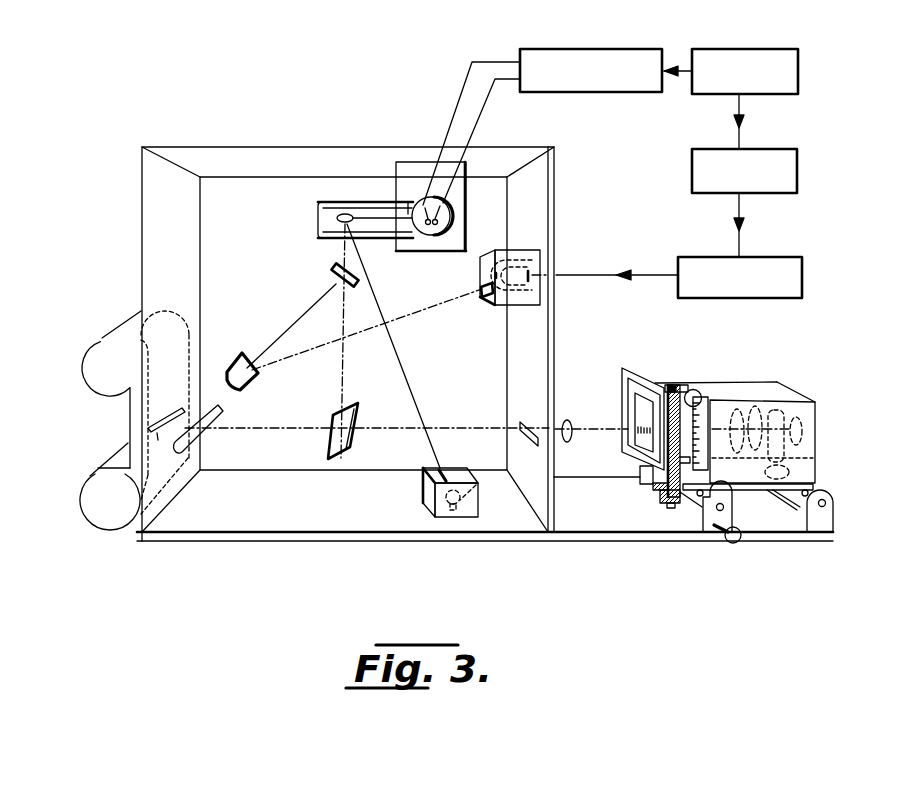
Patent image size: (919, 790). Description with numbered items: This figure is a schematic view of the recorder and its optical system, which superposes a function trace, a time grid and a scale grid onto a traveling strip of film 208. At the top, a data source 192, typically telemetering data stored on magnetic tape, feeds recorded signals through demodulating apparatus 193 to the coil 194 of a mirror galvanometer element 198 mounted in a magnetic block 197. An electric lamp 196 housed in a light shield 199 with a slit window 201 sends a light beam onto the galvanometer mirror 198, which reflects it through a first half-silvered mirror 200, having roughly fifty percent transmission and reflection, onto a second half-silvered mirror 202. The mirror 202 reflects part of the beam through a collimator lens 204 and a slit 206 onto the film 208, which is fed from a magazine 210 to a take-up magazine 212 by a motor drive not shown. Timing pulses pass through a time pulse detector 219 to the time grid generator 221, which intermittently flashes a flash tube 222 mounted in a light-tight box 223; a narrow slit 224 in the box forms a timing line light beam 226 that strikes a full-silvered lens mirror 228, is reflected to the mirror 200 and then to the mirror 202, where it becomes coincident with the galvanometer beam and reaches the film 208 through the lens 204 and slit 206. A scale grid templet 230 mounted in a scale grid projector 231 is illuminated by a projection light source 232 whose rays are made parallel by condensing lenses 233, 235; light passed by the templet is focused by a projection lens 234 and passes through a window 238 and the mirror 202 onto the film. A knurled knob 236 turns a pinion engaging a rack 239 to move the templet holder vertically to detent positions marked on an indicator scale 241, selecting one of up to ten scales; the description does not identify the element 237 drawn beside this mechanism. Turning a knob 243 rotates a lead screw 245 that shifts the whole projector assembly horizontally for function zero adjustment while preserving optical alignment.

The data source 192 is at (802, 48).
The demodulating apparatus 193 is at (608, 48).
The coil 194 is at (424, 202).
The electric lamp 196 is at (458, 512).
The magnetic block 197 is at (465, 224).
The mirror galvanometer element 198 is at (343, 214).
The light shield 199 is at (478, 503).
The first half-silvered mirror 200 is at (335, 266).
The slit window 201 is at (449, 472).
The second half-silvered mirror 202 is at (347, 450).
The collimator lens 204 is at (192, 437).
The slit 206 is at (157, 433).
The strip of film 208 is at (148, 426).
The magazine 210 is at (92, 348).
The take-up magazine 212 is at (92, 478).
The time pulse detector 219 is at (798, 171).
The time grid generator 221 is at (803, 277).
The flash tube 222 is at (532, 286).
The light-tight box 223 is at (528, 250).
The narrow slit 224 is at (494, 295).
The timing line light beam 226 is at (361, 333).
The full-silvered lens mirror 228 is at (240, 392).
The scale grid templet 230 is at (646, 420).
The scale grid projector 231 is at (817, 457).
The projection light source 232 is at (786, 408).
The condensing lens 233 is at (740, 450).
The projection lens 234 is at (568, 443).
The condensing lens 235 is at (758, 408).
The knurled knob 236 is at (696, 390).
The hatched scale 237 is at (668, 387).
The window 238 is at (525, 419).
The rack 239 is at (678, 503).
The indicator scale 241 is at (710, 420).
The knob 243 is at (735, 543).
The lead screw 245 is at (693, 496).